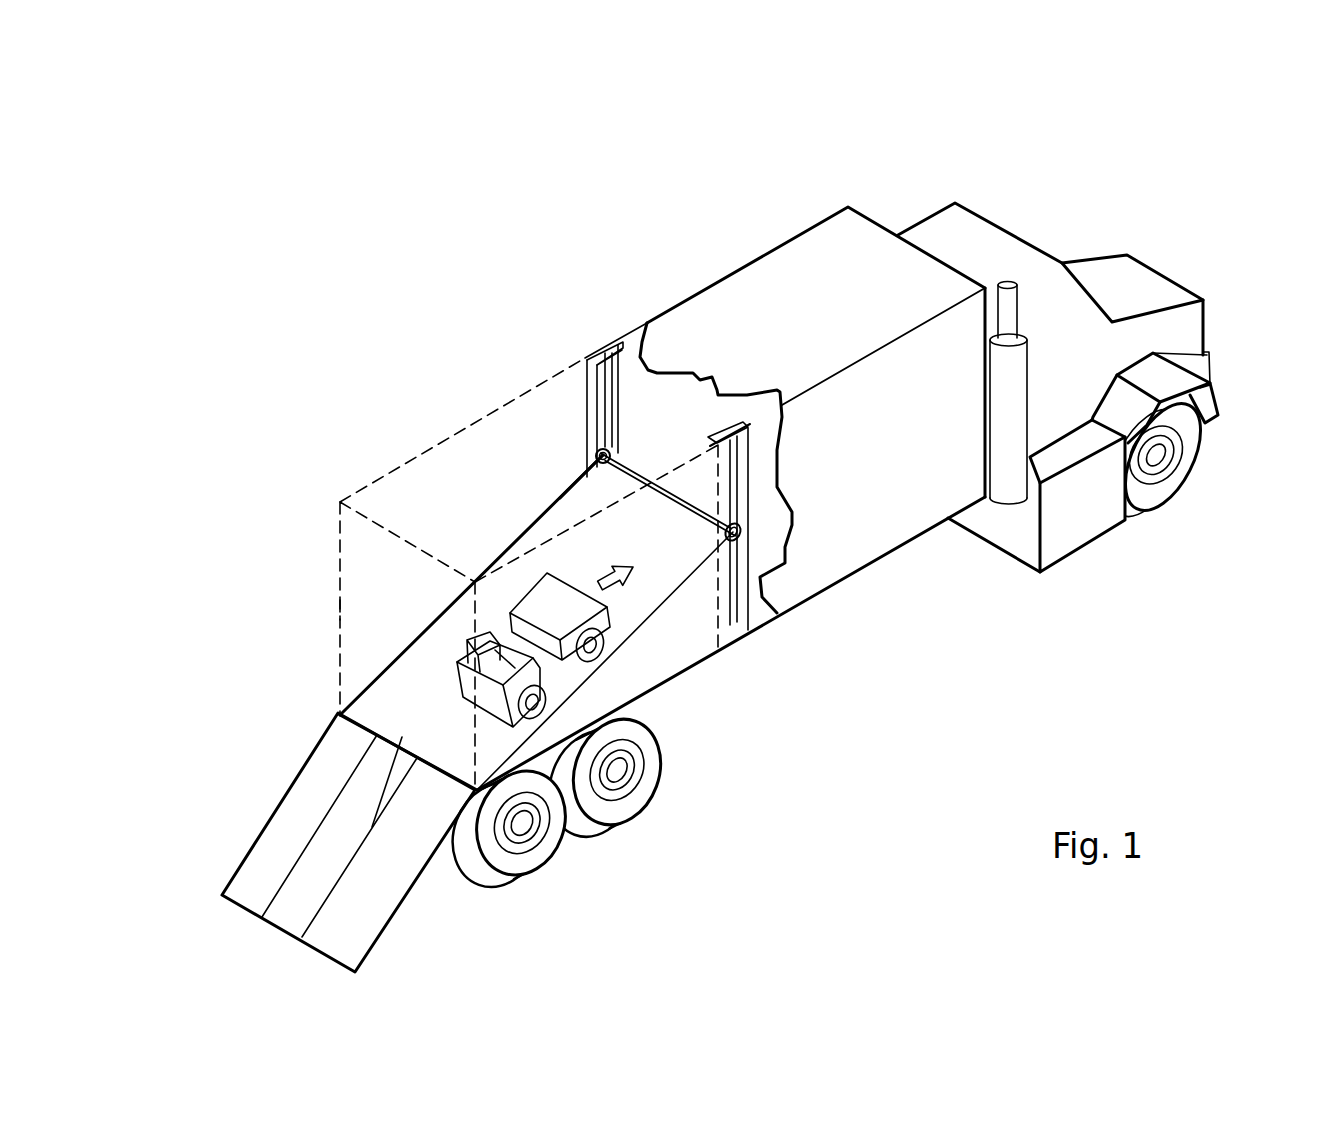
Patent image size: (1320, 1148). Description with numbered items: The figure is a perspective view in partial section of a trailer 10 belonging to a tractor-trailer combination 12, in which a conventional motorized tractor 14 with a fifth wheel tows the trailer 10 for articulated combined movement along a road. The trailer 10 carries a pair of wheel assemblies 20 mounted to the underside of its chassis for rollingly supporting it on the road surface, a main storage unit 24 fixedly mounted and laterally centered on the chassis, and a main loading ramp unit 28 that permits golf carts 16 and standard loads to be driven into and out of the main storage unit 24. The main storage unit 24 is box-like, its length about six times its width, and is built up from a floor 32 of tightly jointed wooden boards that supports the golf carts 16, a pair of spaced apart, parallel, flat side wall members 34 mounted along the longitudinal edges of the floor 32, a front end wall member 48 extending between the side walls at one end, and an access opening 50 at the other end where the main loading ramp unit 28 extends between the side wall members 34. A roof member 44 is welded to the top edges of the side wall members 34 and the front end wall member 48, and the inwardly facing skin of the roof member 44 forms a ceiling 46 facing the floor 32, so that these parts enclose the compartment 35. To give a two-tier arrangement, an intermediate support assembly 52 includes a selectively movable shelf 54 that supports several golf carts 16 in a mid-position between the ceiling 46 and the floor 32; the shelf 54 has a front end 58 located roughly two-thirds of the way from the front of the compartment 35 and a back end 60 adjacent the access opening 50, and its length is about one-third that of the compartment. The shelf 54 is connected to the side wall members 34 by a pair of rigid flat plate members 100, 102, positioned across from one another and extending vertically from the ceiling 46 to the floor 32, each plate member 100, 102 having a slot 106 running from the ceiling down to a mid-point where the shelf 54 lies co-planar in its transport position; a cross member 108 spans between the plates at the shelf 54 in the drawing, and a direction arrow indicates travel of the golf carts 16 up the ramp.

The trailer 10 is at (362, 388).
The tractor-trailer combination 12 is at (1112, 588).
The tractor 14 is at (1138, 282).
The golf carts 16 is at (565, 598).
The wheel assemblies 20 is at (598, 855).
The main storage unit 24 is at (682, 345).
The main loading ramp unit 28 is at (262, 797).
The floor 32 is at (683, 640).
The side wall members 34 is at (446, 458).
The compartment 35 is at (492, 436).
The roof member 44 is at (772, 262).
The ceiling 46 is at (708, 383).
The front end wall member 48 is at (918, 208).
The access opening 50 is at (342, 600).
The intermediate support assembly 52 is at (508, 519).
The shelf 54 is at (417, 680).
The front end 58 is at (586, 478).
The back end 60 is at (393, 750).
The plate member 100 is at (585, 400).
The plate member 102 is at (732, 587).
The slot 106 is at (603, 420).
The cross bar 108 is at (623, 464).